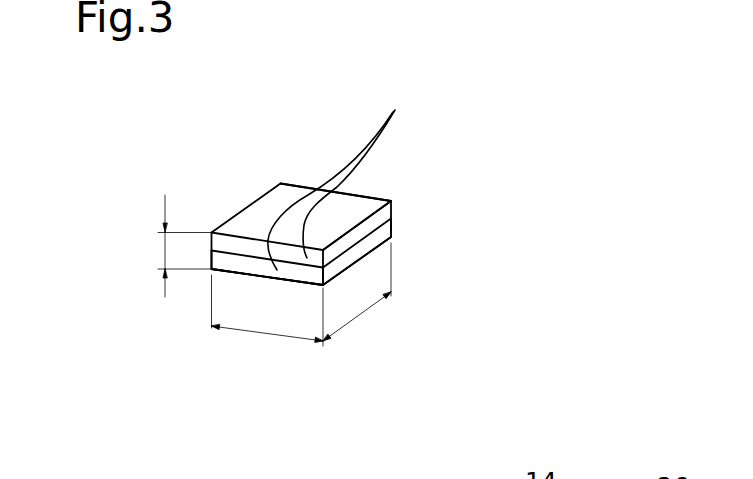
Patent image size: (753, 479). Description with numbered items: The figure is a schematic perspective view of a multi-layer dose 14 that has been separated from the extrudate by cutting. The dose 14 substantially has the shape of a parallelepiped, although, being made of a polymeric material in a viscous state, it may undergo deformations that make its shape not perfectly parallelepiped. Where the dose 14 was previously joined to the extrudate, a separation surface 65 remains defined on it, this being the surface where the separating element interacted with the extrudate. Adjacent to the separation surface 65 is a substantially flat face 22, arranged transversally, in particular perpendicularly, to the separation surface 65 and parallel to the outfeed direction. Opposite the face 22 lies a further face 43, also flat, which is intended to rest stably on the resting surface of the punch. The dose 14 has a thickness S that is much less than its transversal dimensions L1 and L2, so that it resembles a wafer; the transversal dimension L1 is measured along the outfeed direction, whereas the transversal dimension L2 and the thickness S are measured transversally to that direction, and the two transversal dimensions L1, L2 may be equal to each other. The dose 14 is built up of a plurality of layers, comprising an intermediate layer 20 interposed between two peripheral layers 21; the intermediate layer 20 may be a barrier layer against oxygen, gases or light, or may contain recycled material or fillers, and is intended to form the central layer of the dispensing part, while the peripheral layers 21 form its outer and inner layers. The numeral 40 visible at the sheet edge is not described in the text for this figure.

The dose 14 is at (305, 122).
The intermediate layer 20 is at (233, 251).
The peripheral layers 21 is at (346, 180).
The face 22 is at (355, 208).
The separation surface 65 is at (363, 229).
The further face 43 is at (240, 296).
The thickness S is at (166, 249).
The transversal dimension L1 is at (270, 335).
The transversal dimension L2 is at (356, 317).
The element of adjacent figure (partially shown) 40 is at (599, 478).